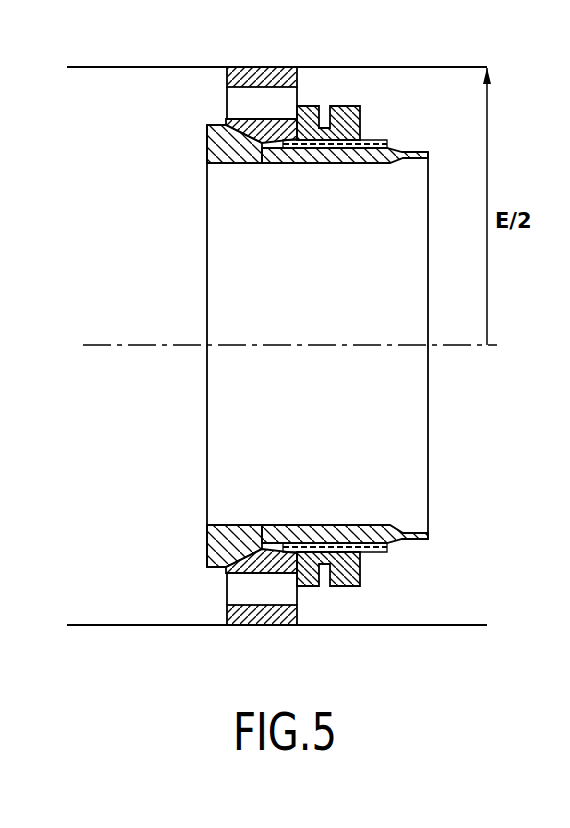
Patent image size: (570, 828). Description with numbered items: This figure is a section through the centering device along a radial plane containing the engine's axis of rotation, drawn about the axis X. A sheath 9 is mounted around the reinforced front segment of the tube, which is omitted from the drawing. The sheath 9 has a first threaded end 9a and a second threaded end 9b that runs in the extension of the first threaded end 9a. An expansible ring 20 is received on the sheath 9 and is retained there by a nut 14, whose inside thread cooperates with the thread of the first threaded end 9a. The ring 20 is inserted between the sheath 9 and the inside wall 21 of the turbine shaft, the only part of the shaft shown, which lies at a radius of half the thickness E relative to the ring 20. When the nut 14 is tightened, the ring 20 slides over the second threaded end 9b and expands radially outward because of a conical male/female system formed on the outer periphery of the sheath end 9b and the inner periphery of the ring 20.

The sheath 9 is at (194, 215).
The first threaded end 9a is at (349, 167).
The second threaded end 9b is at (207, 153).
The nut 14 is at (361, 118).
The expansible ring 20 is at (209, 81).
The inside wall 21 is at (277, 346).
The axis X is at (114, 343).